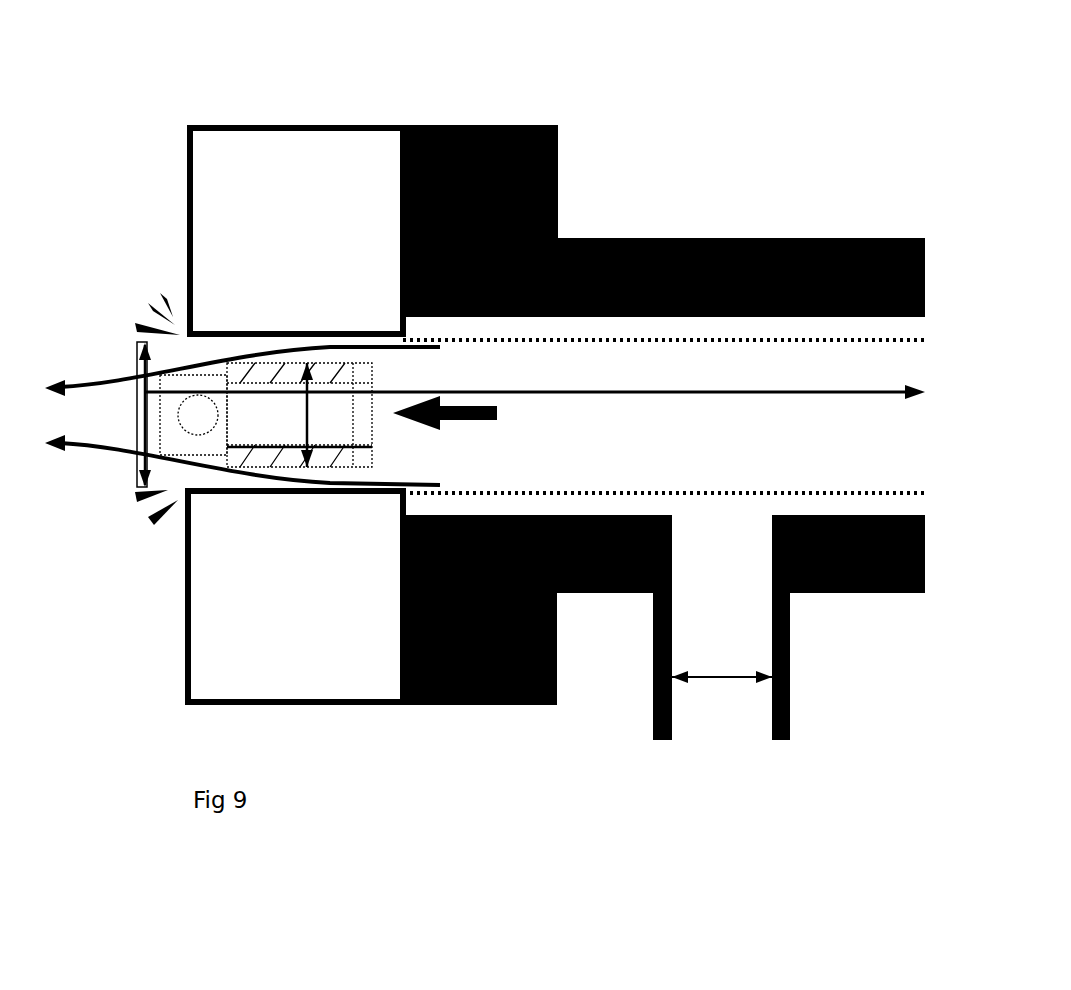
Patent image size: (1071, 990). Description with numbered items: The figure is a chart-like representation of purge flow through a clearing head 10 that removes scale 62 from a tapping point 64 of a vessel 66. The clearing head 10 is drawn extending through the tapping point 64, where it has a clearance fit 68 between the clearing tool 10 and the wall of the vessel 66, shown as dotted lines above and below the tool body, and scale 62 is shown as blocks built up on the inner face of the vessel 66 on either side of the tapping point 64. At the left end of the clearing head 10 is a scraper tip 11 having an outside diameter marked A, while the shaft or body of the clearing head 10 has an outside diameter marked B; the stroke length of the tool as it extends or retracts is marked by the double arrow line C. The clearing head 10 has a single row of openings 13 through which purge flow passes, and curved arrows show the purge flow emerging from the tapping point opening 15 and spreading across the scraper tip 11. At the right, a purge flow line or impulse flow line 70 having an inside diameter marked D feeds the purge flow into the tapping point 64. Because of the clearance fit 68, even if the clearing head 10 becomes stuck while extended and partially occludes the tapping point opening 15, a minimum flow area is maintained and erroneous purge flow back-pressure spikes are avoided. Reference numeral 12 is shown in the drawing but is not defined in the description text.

The clearing head 10 is at (173, 360).
The scraper tip 11 is at (125, 470).
The shield plate 12 is at (133, 337).
The openings 13 is at (200, 367).
The tapping point opening 15 is at (223, 477).
The scale 62 is at (297, 155).
The tapping point 64 is at (765, 440).
The vessel 66 is at (432, 122).
The clearance fit 68 is at (413, 327).
The purge flow line 70 is at (693, 727).